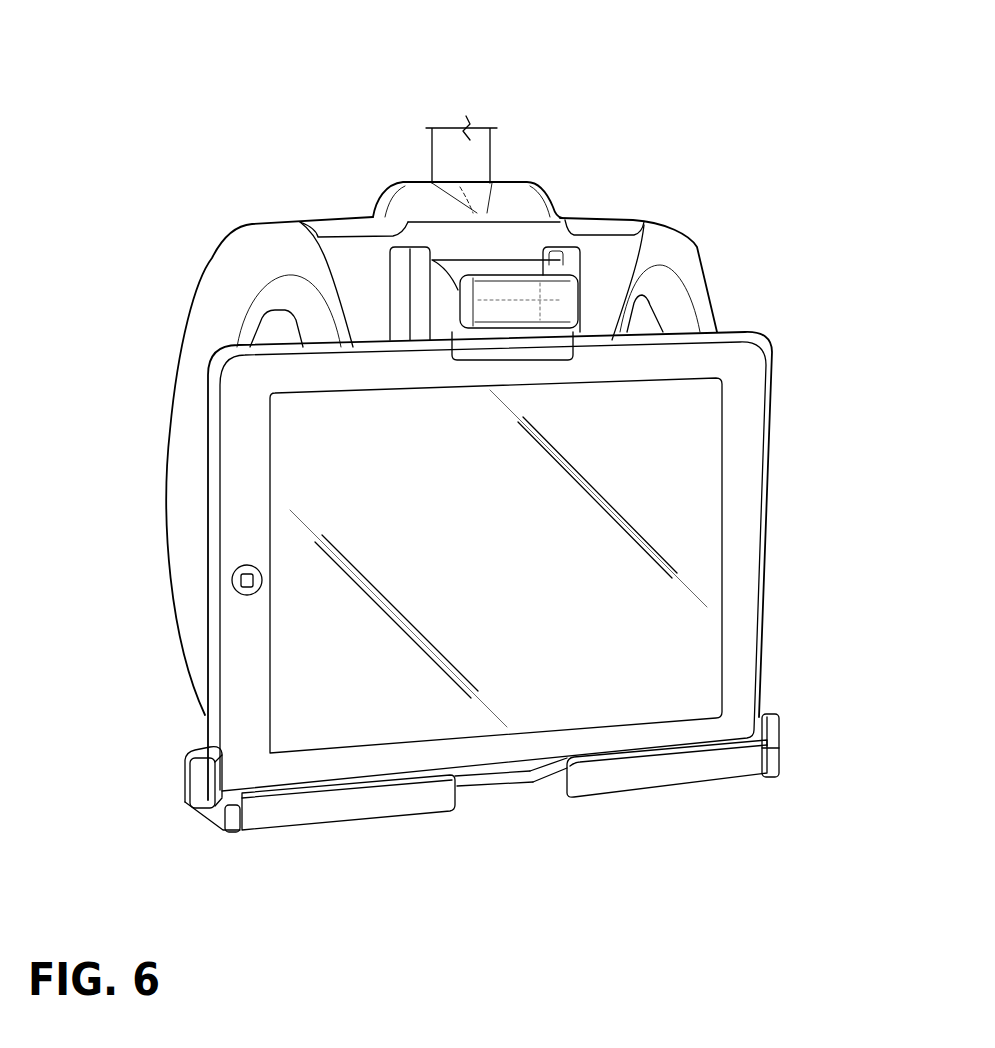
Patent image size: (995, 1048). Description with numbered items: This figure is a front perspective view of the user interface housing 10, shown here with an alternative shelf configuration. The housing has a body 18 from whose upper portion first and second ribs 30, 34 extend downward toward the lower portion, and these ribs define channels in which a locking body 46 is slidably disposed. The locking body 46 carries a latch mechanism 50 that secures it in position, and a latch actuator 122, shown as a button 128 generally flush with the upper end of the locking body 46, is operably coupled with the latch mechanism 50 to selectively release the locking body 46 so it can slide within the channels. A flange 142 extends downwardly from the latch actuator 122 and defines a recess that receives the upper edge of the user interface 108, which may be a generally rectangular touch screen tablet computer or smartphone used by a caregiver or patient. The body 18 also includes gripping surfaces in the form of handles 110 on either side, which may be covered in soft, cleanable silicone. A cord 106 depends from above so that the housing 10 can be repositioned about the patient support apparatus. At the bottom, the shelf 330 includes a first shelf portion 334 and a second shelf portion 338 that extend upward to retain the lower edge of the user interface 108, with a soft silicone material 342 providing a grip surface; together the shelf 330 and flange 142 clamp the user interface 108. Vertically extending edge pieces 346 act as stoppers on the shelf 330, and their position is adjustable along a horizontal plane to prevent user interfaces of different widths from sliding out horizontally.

The user interface housing 10 is at (242, 130).
The body 18 is at (607, 250).
The first rib 30 is at (403, 282).
The second rib 34 is at (573, 327).
The locking body 46 is at (461, 199).
The latch mechanism 50 is at (462, 262).
The cord 106 is at (455, 157).
The user interface 108 is at (608, 590).
The handle 110 is at (190, 405).
The latch actuator 122 is at (503, 302).
The button 128 is at (527, 310).
The flange 142 is at (540, 350).
The shelf 330 is at (469, 785).
The first shelf portion 334 is at (377, 800).
The second shelf portion 338 is at (620, 770).
The material 342 is at (563, 777).
The edge piece 346 is at (202, 782).